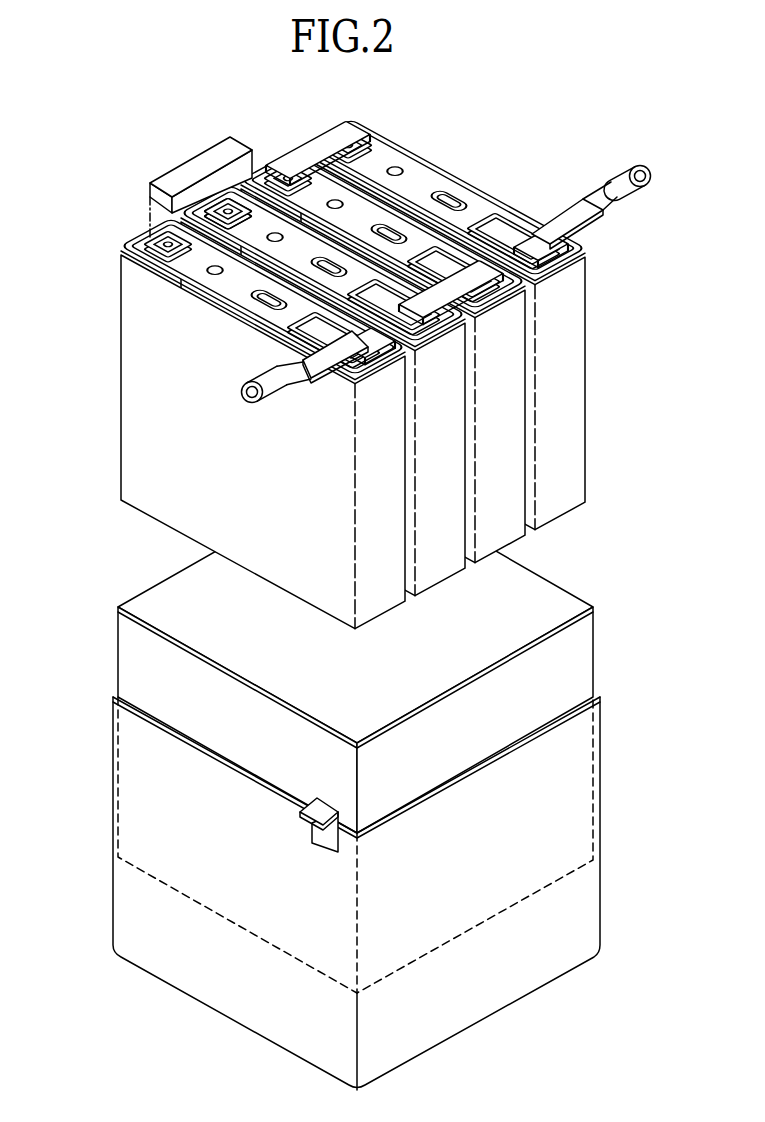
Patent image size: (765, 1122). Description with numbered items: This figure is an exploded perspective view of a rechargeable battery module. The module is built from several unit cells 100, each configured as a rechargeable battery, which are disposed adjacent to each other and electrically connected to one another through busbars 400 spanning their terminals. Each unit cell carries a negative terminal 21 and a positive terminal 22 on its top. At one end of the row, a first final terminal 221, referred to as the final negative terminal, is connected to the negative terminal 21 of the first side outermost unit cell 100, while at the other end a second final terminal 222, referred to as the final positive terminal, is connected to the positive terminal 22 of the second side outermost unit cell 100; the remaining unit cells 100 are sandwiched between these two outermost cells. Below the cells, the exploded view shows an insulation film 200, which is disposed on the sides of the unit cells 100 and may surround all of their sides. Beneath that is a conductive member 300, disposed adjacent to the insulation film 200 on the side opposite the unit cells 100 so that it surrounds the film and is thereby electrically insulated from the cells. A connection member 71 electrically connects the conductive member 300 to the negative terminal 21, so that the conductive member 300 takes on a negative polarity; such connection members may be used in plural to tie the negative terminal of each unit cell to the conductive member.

The unit cells 100 is at (110, 329).
The negative terminal 21 is at (216, 195).
The positive terminal 22 is at (436, 331).
The first final terminal 221 is at (303, 365).
The second final terminal 222 is at (567, 216).
The busbars 400 is at (340, 137).
The insulation film 200 is at (600, 629).
The conductive member 300 is at (603, 756).
The connection member 71 is at (320, 842).